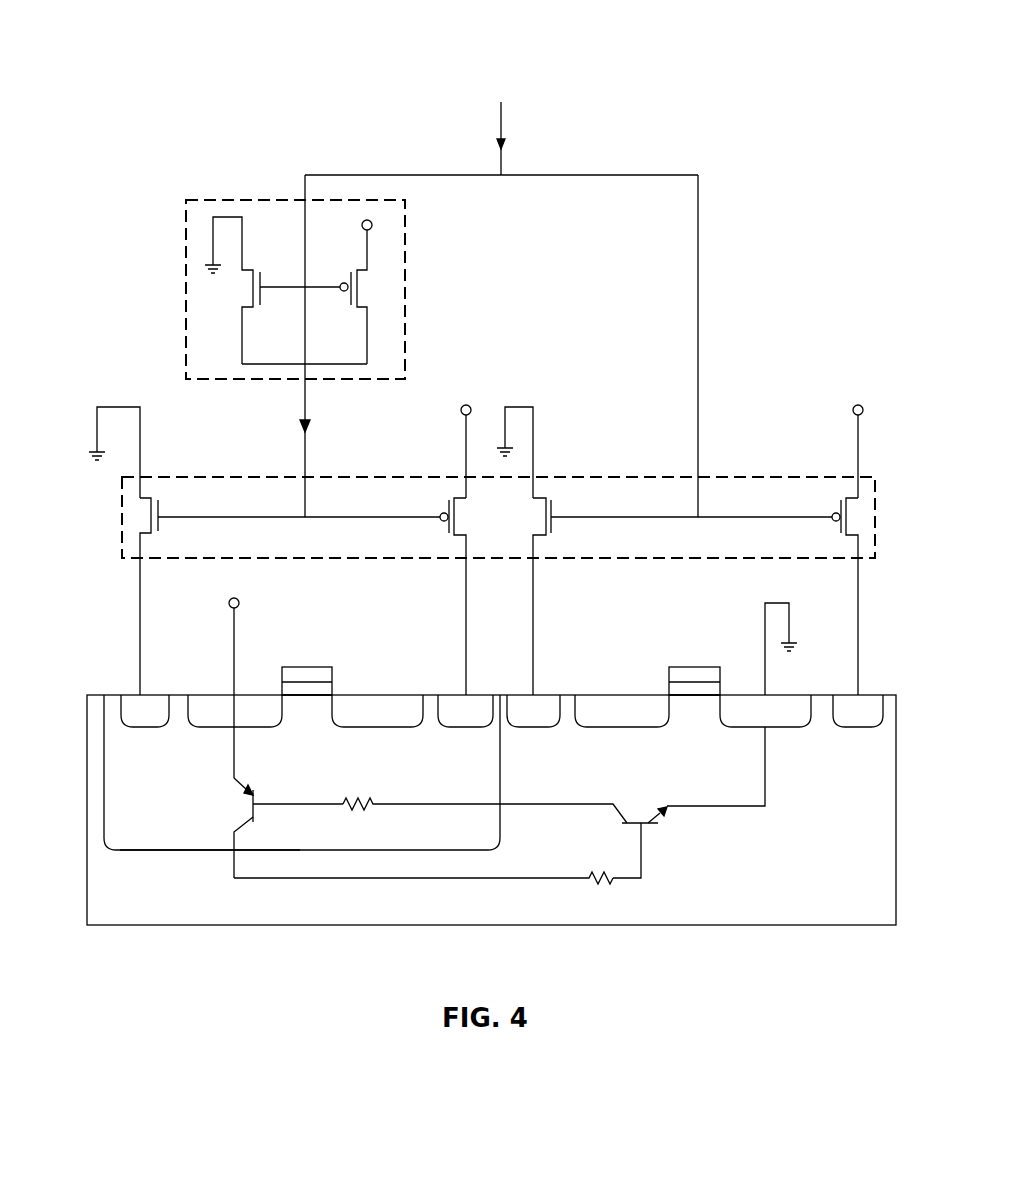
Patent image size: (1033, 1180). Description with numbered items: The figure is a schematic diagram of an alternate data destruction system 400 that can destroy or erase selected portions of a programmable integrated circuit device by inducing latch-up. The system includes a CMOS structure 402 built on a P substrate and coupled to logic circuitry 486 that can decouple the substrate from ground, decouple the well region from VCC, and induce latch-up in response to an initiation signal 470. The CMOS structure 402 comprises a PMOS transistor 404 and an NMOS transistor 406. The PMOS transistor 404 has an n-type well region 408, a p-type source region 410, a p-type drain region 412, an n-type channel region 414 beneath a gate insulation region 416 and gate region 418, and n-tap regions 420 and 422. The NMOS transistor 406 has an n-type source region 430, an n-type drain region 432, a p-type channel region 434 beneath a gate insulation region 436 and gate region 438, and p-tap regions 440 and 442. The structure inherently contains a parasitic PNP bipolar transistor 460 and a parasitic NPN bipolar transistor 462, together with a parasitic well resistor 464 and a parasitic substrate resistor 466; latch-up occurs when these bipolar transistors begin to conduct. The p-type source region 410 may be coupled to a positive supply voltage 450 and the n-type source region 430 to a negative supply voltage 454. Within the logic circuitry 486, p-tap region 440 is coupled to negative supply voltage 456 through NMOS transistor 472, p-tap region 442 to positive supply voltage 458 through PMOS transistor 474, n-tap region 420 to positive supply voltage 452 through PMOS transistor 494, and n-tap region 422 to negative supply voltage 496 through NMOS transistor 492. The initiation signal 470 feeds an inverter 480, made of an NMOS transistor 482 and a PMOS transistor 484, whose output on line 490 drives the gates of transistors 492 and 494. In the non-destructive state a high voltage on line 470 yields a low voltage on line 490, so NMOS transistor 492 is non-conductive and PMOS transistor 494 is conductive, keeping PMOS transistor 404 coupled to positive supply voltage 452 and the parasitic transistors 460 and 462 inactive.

The data destruction system 400 is at (483, 15).
The CMOS structure 402 is at (172, 926).
The PMOS transistor 404 is at (127, 773).
The NMOS transistor 406 is at (857, 773).
The n-type well region 408 is at (173, 851).
The p-type source region 410 is at (248, 733).
The p-type drain region 412 is at (363, 733).
The n-type channel region 414 is at (302, 708).
The gate insulation region 416 is at (333, 688).
The gate region 418 is at (280, 680).
The n-tap region 420 is at (478, 733).
The n-tap region 422 is at (135, 733).
The n-type source region 430 is at (756, 731).
The n-type drain region 432 is at (636, 733).
The p-type channel region 434 is at (700, 707).
The gate insulation region 436 is at (722, 690).
The gate region 438 is at (668, 677).
The p-tap region 440 is at (521, 733).
The p-tap region 442 is at (871, 731).
The positive supply voltage 450 is at (225, 610).
The positive supply voltage 452 is at (462, 411).
The negative supply voltage 454 is at (797, 647).
The negative supply voltage 456 is at (500, 445).
The positive supply voltage 458 is at (866, 413).
The parasitic PNP bipolar transistor 460 is at (262, 814).
The parasitic NPN bipolar transistor 462 is at (632, 826).
The parasitic resistor 464 is at (360, 812).
The parasitic resistor 466 is at (605, 885).
The initiation signal 470 is at (505, 148).
The NMOS transistor 472 is at (562, 533).
The PMOS transistor 474 is at (832, 530).
The inverter 480 is at (222, 200).
The NMOS transistor 482 is at (262, 298).
The PMOS transistor 484 is at (345, 302).
The logic circuitry 486 is at (290, 562).
The line 490 is at (310, 430).
The NMOS transistor 492 is at (168, 533).
The PMOS transistor 494 is at (443, 533).
The negative supply voltage 496 is at (75, 457).